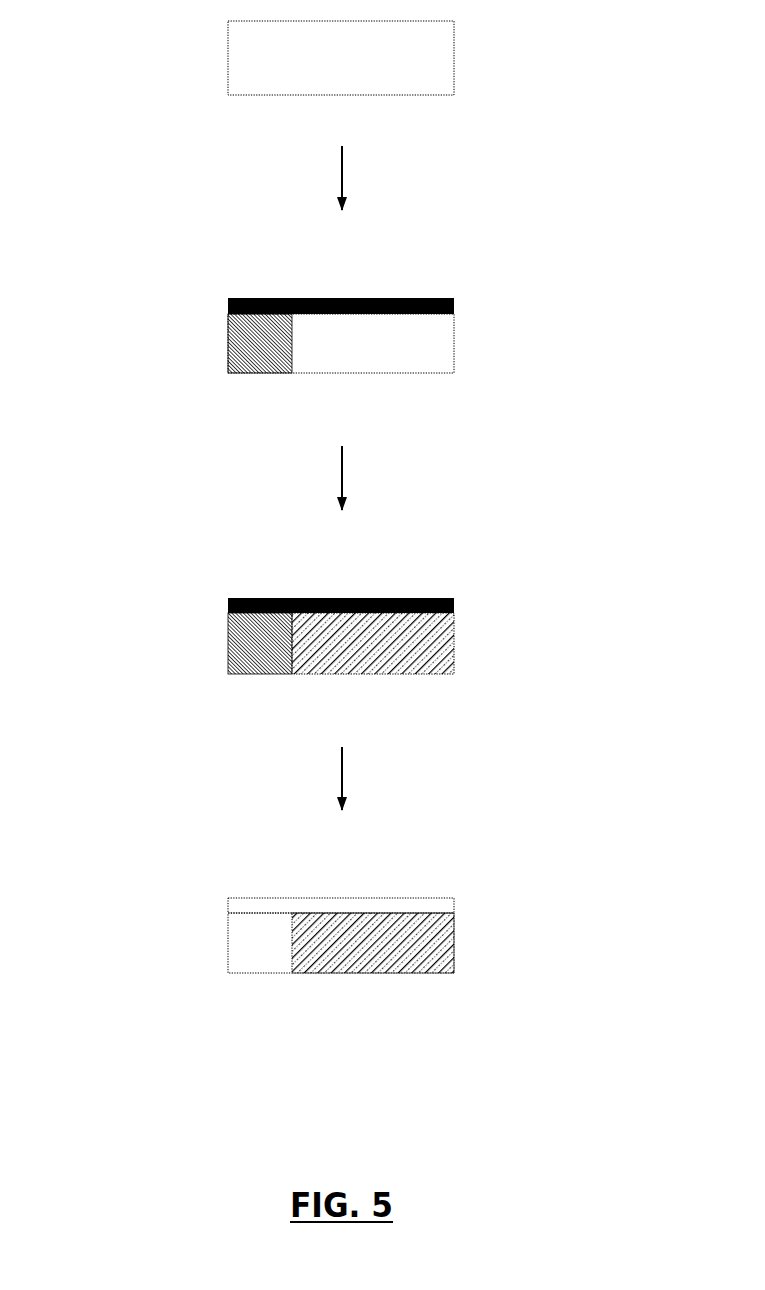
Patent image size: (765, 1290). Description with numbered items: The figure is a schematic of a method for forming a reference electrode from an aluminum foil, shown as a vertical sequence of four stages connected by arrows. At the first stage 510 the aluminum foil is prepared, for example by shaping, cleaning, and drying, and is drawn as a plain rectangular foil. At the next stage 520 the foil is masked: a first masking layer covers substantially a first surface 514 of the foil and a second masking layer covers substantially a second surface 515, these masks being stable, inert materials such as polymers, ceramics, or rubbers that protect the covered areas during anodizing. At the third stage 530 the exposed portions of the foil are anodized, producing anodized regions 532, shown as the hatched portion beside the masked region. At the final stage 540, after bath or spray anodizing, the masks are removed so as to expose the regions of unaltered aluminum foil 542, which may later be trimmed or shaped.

The aluminum foil preparation step 510 is at (203, 38).
The first surface 514 is at (342, 317).
The second surface 515 is at (260, 380).
The masking step 520 is at (203, 296).
The anodizing step 530 is at (205, 616).
The anodized regions 532 is at (454, 635).
The mask removal step 540 is at (205, 916).
The unaltered aluminum foil 542 is at (454, 905).